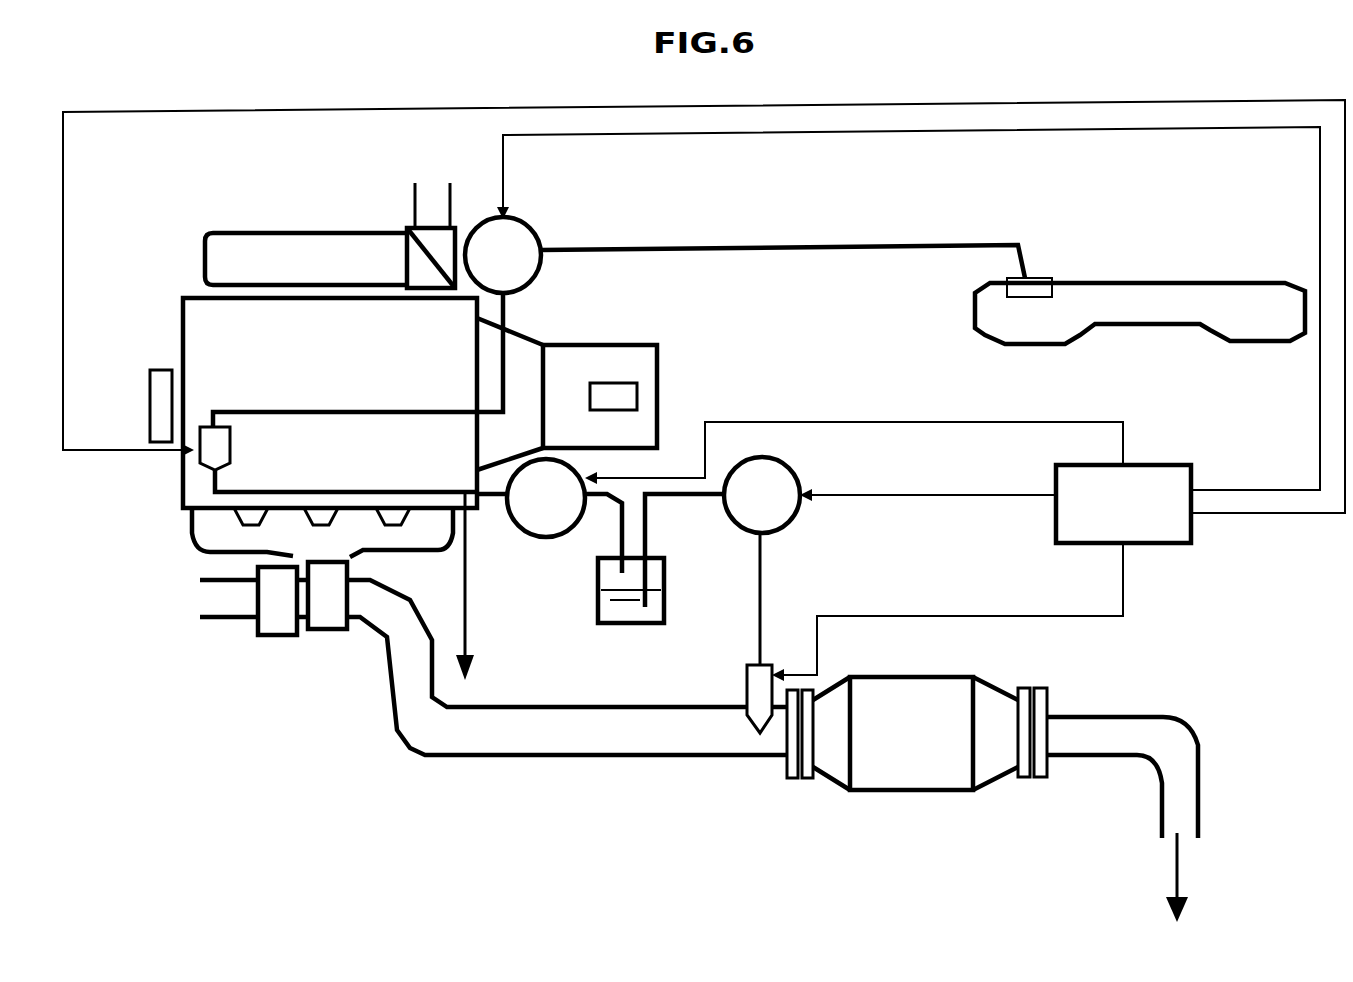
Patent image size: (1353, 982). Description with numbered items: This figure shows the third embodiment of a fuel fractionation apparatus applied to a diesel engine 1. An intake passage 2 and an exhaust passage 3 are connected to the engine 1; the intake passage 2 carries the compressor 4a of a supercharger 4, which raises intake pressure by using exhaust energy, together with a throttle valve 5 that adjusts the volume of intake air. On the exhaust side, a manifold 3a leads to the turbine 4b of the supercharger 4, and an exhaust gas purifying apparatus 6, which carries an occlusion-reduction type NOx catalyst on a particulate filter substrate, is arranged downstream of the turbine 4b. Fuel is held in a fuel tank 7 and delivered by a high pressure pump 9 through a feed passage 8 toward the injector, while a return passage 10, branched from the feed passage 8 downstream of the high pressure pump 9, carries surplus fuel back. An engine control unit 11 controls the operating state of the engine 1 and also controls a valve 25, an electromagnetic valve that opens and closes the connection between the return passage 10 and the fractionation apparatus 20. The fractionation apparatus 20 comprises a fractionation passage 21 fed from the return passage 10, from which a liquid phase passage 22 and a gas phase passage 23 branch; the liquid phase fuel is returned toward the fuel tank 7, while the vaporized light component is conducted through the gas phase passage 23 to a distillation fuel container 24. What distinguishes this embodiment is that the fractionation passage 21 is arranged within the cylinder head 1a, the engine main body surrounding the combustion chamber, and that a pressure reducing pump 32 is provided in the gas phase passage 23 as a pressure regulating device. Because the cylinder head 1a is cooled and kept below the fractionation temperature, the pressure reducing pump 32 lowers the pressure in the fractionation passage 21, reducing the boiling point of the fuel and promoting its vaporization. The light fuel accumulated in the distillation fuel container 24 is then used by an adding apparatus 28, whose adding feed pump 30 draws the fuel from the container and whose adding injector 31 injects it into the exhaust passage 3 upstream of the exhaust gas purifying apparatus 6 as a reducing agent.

The diesel engine 1 is at (148, 288).
The cylinder head 1a is at (183, 332).
The intake passage 2 is at (290, 233).
The exhaust passage 3 is at (460, 757).
The manifold 3a is at (195, 532).
The supercharger 4 is at (288, 651).
The compressor 4a is at (272, 638).
The turbine 4b is at (320, 633).
The throttle valve 5 is at (408, 228).
The exhaust gas purifying apparatus 6 is at (907, 790).
The fuel tank 7 is at (1160, 283).
The feed passage 8 is at (840, 247).
The high pressure pump 9 is at (540, 232).
The return passage 10 is at (503, 362).
The engine control unit (ECU) 11 is at (1195, 538).
The fractionation apparatus 20 is at (430, 446).
The fractionation passage 21 is at (270, 490).
The liquid phase passage 22 is at (467, 608).
The gas phase passage 23 is at (492, 498).
The distillation fuel container 24 is at (630, 623).
The valve 25 is at (228, 442).
The adding apparatus 28 is at (738, 630).
The adding feed pump 30 is at (775, 530).
The adding injector 31 is at (743, 690).
The pressure reducing pump 32 is at (543, 538).